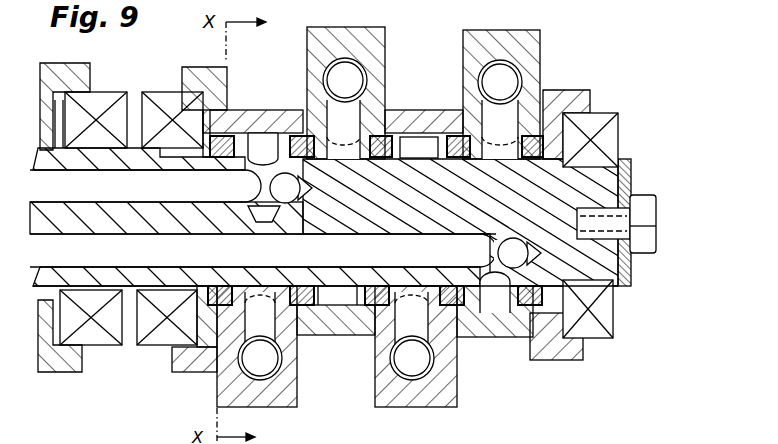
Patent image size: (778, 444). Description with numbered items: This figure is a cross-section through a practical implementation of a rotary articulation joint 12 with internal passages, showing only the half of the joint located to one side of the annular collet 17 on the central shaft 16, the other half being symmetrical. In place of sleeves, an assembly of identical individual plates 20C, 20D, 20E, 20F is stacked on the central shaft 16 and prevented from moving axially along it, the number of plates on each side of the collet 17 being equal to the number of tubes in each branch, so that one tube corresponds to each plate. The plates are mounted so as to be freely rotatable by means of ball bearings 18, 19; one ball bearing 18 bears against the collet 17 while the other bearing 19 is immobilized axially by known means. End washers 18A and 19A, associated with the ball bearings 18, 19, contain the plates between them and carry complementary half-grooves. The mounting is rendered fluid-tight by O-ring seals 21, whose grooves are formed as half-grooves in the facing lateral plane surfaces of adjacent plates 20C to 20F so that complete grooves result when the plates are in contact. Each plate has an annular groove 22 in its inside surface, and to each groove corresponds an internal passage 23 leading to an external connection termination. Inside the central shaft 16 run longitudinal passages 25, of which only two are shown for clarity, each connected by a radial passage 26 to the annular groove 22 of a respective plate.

The rotary articulation joint 12 is at (262, 92).
The central shaft 16 is at (583, 190).
The annular collet 17 is at (127, 300).
The ball bearing 18 is at (147, 98).
The end washer 18A is at (188, 83).
The ball bearing 19 is at (613, 127).
The end washer 19A is at (574, 90).
The individual plate 20C is at (288, 397).
The individual plate 20D is at (357, 333).
The individual plate 20E is at (450, 390).
The individual plate 20F is at (510, 340).
The O-ring seal 21 is at (452, 108).
The annular groove 22 is at (553, 350).
The internal passage 23 is at (536, 72).
The longitudinal passage 25 is at (150, 185).
The radial passage 26 is at (265, 165).